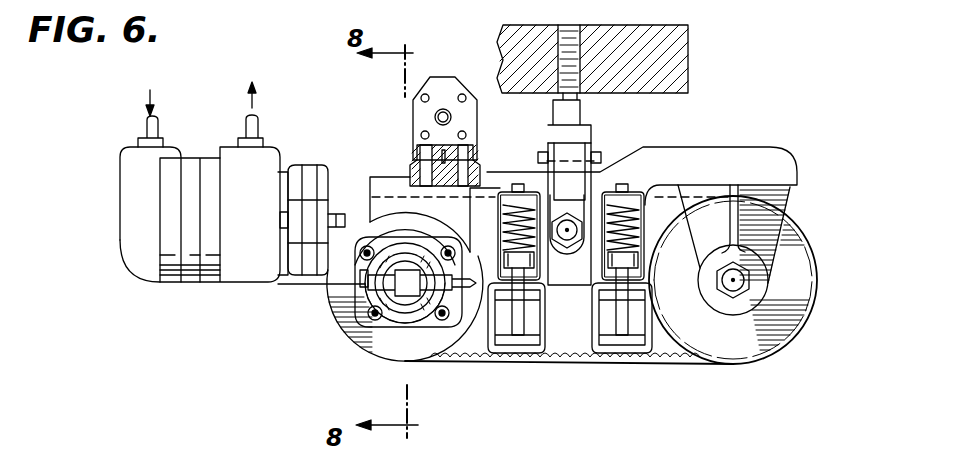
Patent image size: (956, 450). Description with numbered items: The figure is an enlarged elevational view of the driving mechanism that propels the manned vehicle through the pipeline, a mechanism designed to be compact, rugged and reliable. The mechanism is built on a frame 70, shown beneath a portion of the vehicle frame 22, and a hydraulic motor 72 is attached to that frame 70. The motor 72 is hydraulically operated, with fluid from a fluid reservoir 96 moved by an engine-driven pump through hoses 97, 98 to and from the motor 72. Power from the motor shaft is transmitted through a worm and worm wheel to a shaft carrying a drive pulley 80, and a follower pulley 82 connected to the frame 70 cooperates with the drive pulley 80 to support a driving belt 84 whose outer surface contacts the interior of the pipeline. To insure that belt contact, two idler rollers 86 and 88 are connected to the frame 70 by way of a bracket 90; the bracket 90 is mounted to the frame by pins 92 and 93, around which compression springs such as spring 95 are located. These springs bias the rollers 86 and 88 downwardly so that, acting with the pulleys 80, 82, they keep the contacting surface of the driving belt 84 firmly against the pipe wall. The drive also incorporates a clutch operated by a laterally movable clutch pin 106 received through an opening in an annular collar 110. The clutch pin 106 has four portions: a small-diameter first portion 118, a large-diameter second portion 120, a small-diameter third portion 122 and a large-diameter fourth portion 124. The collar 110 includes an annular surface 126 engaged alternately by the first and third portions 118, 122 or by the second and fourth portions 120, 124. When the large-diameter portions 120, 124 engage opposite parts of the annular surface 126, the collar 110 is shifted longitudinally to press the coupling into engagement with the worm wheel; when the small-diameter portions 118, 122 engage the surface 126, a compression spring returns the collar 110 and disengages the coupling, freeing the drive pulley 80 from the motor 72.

The frame 22 is at (670, 60).
The frame 70 is at (752, 160).
The hydraulic motor 72 is at (237, 268).
The drive pulley 80 is at (362, 330).
The follower pulley 82 is at (747, 340).
The driving belt 84 is at (682, 363).
The idler roller 86 is at (530, 358).
The idler roller 88 is at (620, 352).
The bracket 90 is at (560, 268).
The pin 92 is at (517, 318).
The pin 93 is at (630, 317).
The compression spring 95 is at (618, 228).
The fluid reservoir 96 is at (503, 232).
The hose 97 is at (143, 127).
The hose 98 is at (258, 130).
The clutch pin 106 is at (360, 288).
The annular collar 110 is at (372, 384).
The first portion 118 is at (349, 296).
The second portion 120 is at (396, 319).
The third portion 122 is at (393, 139).
The fourth portion 124 is at (470, 290).
The annular surface 126 is at (419, 131).